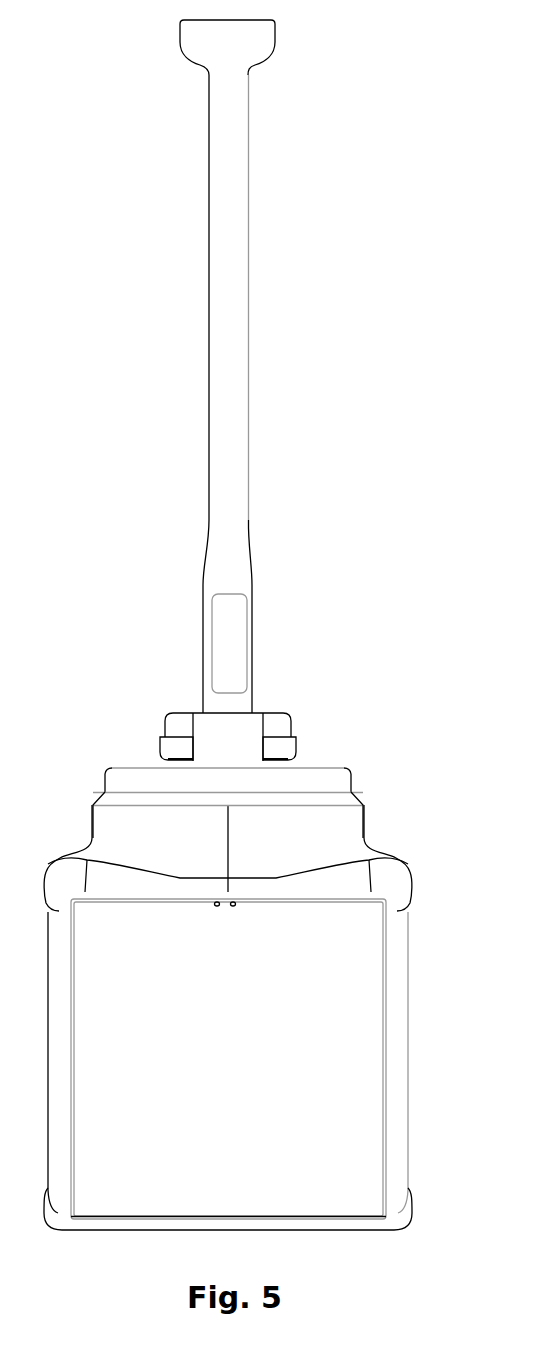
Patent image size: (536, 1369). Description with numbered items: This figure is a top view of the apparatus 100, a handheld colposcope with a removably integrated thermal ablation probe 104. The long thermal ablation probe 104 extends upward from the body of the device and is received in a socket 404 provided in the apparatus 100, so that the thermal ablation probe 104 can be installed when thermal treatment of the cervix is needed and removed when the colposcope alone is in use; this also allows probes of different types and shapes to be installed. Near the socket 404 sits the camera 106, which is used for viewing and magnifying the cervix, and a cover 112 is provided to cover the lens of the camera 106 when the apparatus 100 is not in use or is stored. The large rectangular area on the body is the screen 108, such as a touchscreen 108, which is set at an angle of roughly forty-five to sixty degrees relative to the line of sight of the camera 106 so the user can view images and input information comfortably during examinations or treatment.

The apparatus 100 is at (402, 536).
The thermal ablation probe 104 is at (235, 359).
The socket 404 is at (242, 745).
The cover 112 is at (176, 730).
The camera 106 is at (282, 763).
The screen 108 is at (245, 1069).